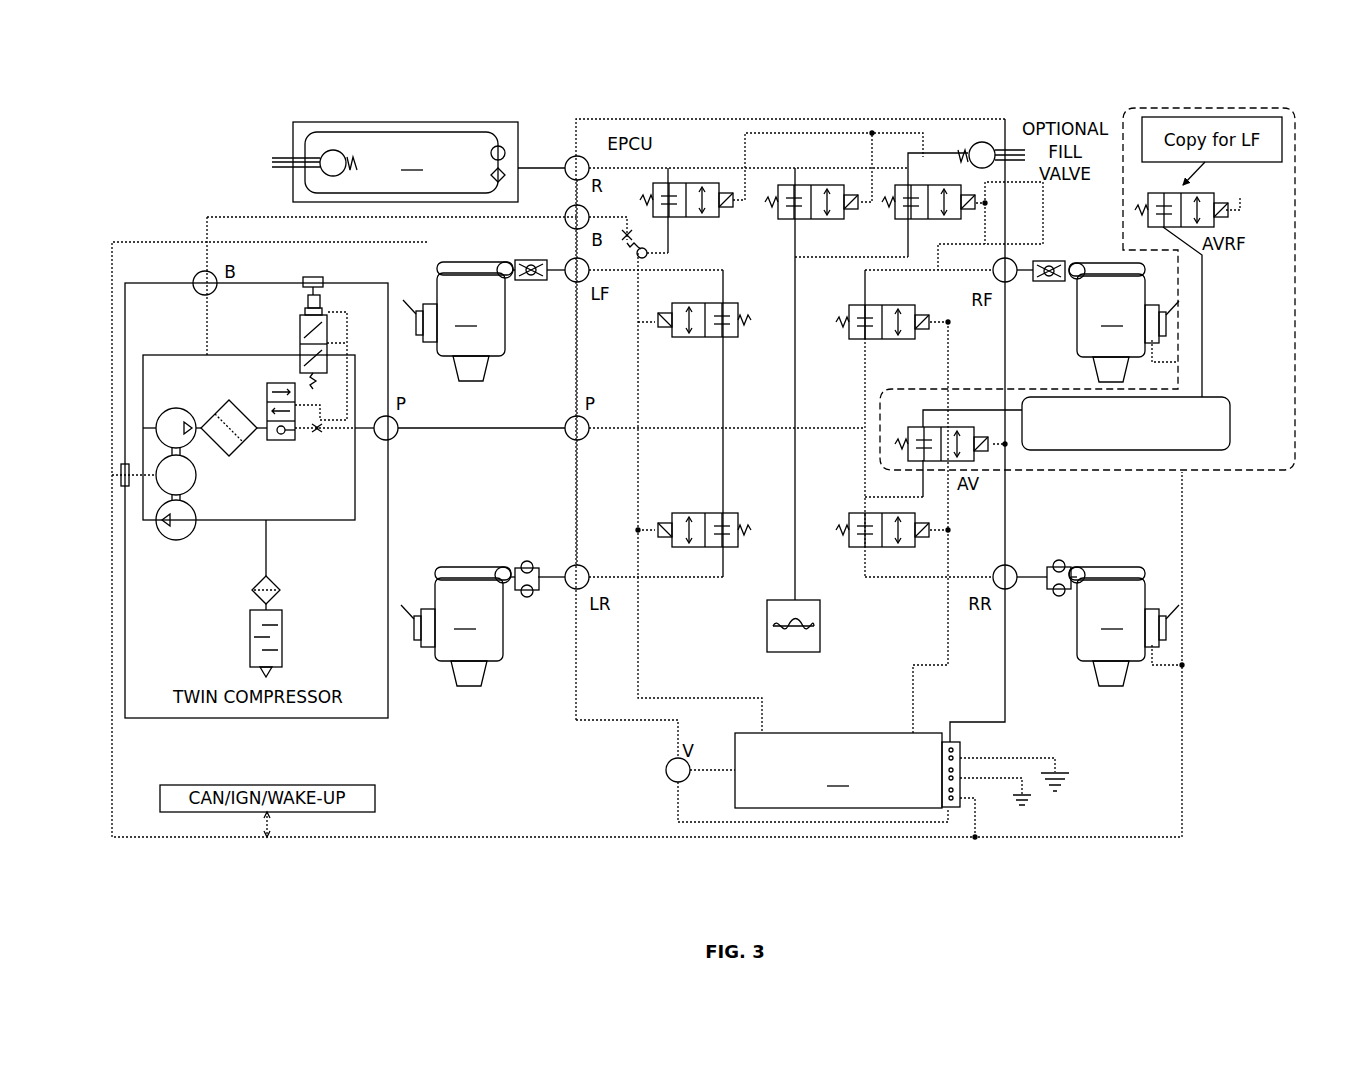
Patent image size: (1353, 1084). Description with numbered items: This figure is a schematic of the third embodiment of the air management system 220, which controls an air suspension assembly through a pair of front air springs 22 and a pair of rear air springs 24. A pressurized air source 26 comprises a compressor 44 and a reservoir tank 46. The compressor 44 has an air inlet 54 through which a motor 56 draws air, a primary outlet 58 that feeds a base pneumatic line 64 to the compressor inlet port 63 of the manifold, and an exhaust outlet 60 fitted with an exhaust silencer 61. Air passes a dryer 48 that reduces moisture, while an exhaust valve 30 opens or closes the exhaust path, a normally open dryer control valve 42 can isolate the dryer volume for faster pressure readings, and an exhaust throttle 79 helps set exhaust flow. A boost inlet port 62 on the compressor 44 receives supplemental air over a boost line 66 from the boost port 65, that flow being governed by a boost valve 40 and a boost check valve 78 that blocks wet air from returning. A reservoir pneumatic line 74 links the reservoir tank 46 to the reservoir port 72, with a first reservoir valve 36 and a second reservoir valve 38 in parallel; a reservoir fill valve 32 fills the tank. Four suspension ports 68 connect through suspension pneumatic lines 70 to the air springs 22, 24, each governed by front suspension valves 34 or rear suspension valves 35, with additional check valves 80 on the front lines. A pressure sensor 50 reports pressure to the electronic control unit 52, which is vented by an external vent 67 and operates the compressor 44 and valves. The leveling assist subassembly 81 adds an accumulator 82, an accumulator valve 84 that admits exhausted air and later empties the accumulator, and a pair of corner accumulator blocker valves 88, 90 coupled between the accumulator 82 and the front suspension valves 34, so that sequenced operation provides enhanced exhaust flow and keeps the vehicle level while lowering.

The pressurized air source 26 is at (232, 190).
The air management system 220 is at (1060, 80).
The reservoir fill valve 32 is at (338, 150).
The reservoir tank 46 is at (405, 162).
The reservoir pneumatic line 74 is at (536, 166).
The reservoir port 72 is at (568, 158).
The boost port 65 is at (567, 211).
The boost line 66 is at (420, 219).
The boost valve 40 is at (680, 183).
The first reservoir valve 36 is at (820, 185).
The second reservoir valve 38 is at (912, 185).
The first corner accumulator blocker valve 88 is at (1210, 200).
The second corner accumulator blocker valve 90 is at (1210, 196).
The leveling assist subassembly 81 is at (1303, 338).
The accumulator 82 is at (1224, 455).
The accumulator valve 84 is at (913, 428).
The boost check valve 78 is at (640, 259).
The check valve 80 is at (524, 265).
The suspension pneumatic line 70 is at (548, 266).
The suspension port 68 is at (568, 283).
The compressor inlet port 63 is at (567, 438).
The base pneumatic line 64 is at (487, 435).
The primary outlet 58 is at (396, 440).
The front air spring 22 is at (791, 322).
The rear air spring 24 is at (790, 626).
The front suspension valve 34 is at (697, 340).
The rear suspension valve 35 is at (700, 513).
The pressure sensor 50 is at (822, 618).
The electronic control unit 52 is at (902, 786).
The external vent 67 is at (672, 778).
The boost inlet port 62 is at (195, 276).
The motor 56 is at (197, 475).
The compressor 44 is at (132, 443).
The dryer 48 is at (229, 404).
The dryer control valve 42 is at (279, 441).
The exhaust throttle 79 is at (305, 443).
The exhaust valve 30 is at (298, 325).
The air inlet 54 is at (306, 565).
The exhaust outlet 60 is at (272, 559).
The exhaust silencer 61 is at (283, 640).